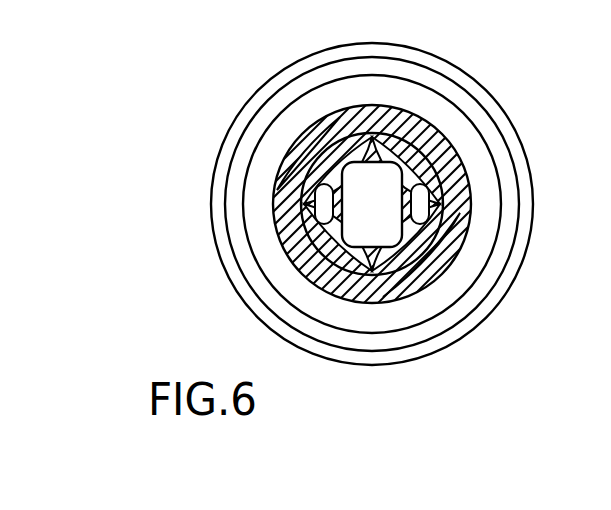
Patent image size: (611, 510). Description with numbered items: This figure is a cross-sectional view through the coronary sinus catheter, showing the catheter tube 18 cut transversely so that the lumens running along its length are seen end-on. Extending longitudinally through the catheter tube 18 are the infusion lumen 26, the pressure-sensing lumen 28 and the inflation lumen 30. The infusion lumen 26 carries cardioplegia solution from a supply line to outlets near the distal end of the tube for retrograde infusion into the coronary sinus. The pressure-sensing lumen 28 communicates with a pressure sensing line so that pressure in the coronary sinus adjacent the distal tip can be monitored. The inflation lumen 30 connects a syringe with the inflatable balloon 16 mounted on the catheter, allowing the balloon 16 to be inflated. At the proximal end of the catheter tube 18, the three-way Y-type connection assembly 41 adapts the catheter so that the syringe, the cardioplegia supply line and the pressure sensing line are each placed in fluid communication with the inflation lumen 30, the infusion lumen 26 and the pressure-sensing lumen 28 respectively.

The inflatable balloon 16 is at (526, 131).
The three-way Y-type connection assembly 41 is at (437, 120).
The catheter tube 18 is at (422, 256).
The infusion lumen 26 is at (292, 263).
The pressure-sensing lumen 28 is at (317, 193).
The inflation lumen 30 is at (433, 202).